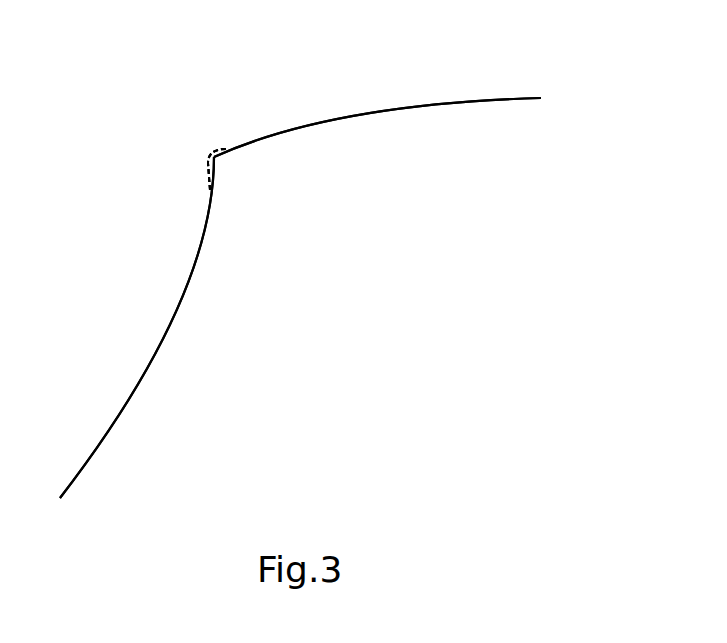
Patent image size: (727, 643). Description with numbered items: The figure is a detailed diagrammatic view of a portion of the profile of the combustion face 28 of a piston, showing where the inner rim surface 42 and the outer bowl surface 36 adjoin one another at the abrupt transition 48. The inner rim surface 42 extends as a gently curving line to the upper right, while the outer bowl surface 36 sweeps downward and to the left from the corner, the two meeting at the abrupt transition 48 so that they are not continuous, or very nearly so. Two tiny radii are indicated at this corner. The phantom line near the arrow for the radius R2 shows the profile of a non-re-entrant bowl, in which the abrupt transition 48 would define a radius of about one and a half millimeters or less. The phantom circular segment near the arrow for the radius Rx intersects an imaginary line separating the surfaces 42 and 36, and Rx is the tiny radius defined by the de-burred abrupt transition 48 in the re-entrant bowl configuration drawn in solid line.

The combustion face 28 is at (507, 73).
The inner rim surface 42 is at (352, 110).
The outer bowl surface 36 is at (185, 294).
The abrupt transition 48 is at (203, 160).
The tiny radius Rx is at (212, 142).
The third convex radius of curvature R2 is at (222, 165).